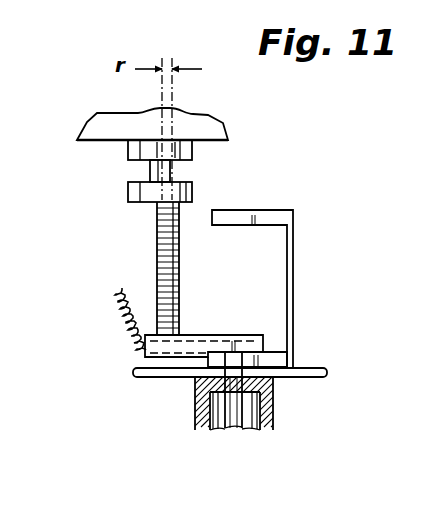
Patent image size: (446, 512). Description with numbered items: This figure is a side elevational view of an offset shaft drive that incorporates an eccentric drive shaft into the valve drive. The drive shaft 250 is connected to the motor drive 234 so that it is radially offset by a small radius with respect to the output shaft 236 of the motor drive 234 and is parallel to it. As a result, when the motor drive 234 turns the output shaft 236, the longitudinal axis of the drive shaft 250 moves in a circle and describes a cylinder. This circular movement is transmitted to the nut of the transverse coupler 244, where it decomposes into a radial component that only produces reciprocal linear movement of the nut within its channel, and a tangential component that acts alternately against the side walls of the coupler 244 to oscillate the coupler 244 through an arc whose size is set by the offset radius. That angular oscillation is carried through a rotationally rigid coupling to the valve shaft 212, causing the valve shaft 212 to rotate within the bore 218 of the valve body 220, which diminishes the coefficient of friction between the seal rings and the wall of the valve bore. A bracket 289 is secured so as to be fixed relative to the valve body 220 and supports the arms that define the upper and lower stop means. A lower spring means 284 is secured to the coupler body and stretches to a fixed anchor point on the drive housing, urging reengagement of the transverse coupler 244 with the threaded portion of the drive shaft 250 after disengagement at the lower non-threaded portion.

The motor drive 234 is at (120, 123).
The output shaft 236 is at (152, 168).
The drive shaft 250 is at (162, 243).
The lower spring means 284 is at (123, 318).
The transverse coupler 244 is at (198, 335).
The bracket 289 is at (293, 293).
The valve body 220 is at (273, 405).
The bore 218 is at (217, 430).
The valve shaft 212 is at (238, 428).